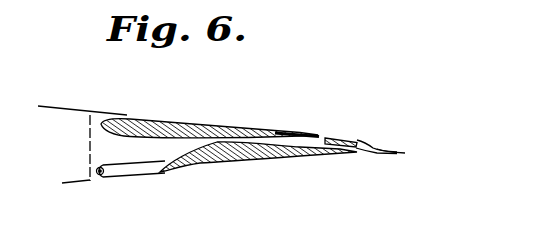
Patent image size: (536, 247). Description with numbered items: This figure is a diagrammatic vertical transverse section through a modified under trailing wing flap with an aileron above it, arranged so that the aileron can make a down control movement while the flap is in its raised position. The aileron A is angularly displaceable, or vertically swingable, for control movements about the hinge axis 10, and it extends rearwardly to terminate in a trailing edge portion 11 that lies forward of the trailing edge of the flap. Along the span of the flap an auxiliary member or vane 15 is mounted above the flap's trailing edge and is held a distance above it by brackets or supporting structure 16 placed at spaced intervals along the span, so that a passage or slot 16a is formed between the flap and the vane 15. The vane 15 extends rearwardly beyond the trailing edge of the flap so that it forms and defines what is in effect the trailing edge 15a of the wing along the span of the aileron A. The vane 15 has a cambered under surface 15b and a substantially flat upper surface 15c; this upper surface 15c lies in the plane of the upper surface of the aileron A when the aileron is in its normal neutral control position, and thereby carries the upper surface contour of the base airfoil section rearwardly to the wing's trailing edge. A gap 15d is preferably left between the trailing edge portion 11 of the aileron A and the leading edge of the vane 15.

The hinge axis 10 is at (145, 125).
The aileron A is at (215, 125).
The trailing edge portion 11 is at (298, 133).
The passage or slot 16a is at (303, 158).
The cambered under surface 15b is at (333, 157).
The flat upper surface 15c is at (329, 140).
The gap 15d is at (322, 139).
The auxiliary member or vane 15 is at (352, 140).
The trailing edge 15a is at (397, 152).
The brackets or supporting structure 16 is at (358, 150).